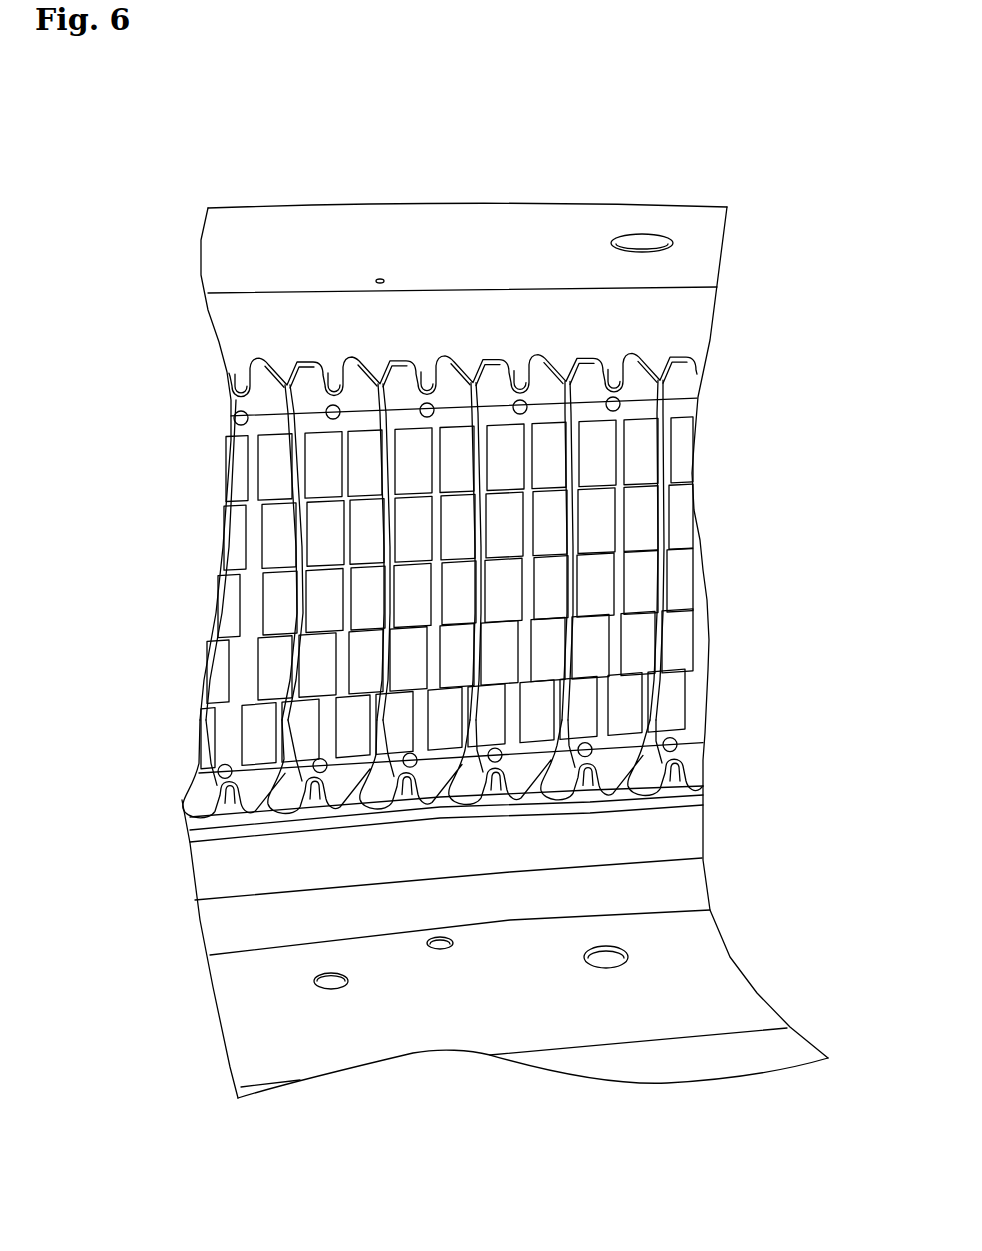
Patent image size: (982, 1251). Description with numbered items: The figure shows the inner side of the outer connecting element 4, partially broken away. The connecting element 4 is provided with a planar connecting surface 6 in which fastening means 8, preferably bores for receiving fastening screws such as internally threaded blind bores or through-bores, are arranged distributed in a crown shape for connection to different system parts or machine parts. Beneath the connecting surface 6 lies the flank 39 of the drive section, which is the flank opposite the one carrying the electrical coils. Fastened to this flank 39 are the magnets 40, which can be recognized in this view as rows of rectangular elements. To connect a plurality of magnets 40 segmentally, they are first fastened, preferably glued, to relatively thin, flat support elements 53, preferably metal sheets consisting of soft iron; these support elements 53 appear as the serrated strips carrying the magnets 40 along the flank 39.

The planar connecting surface 6 is at (306, 230).
The flank 39 is at (464, 308).
The fastening means 8 is at (640, 233).
The outer connecting element 4 is at (680, 312).
The support element 53 is at (680, 392).
The magnet 40 is at (683, 588).